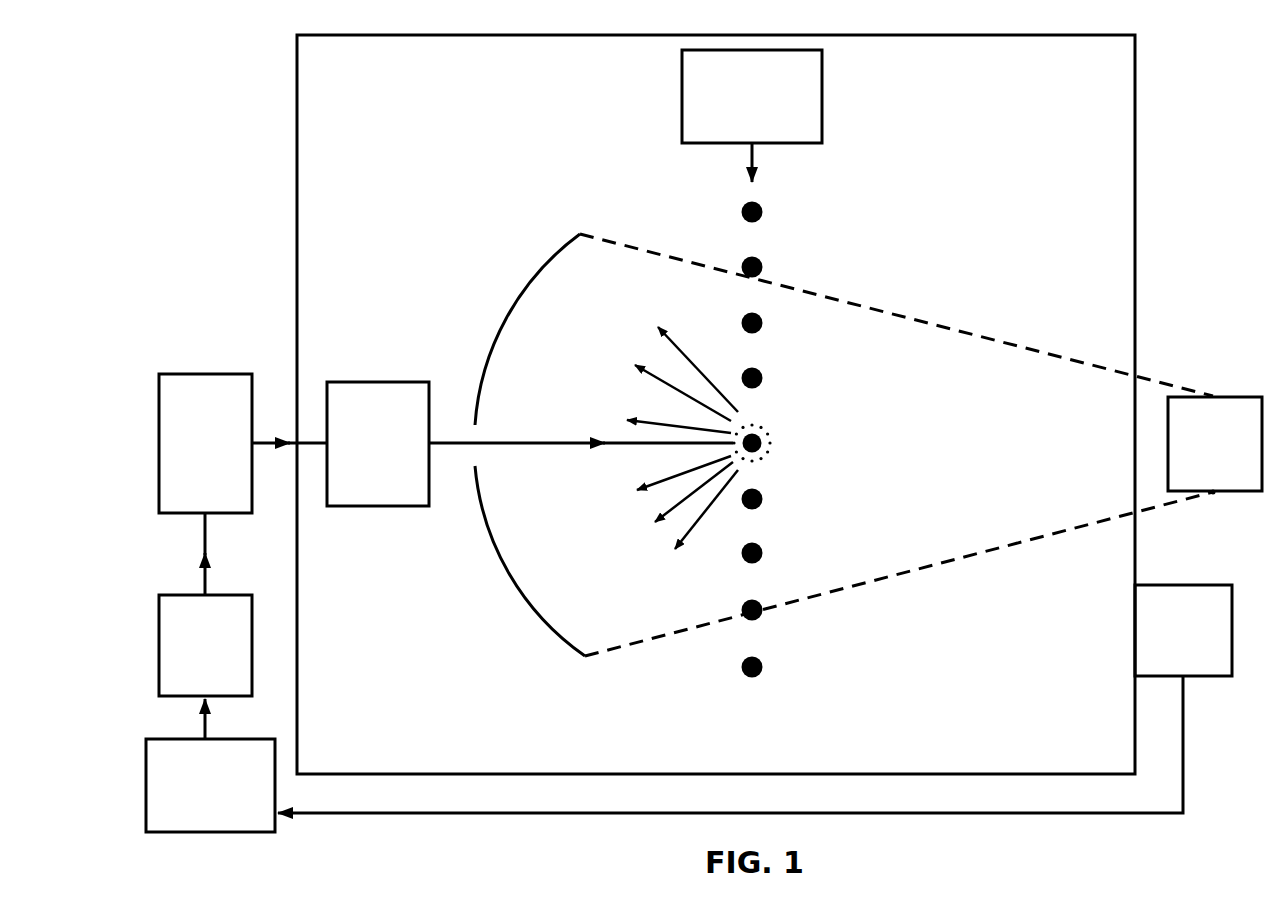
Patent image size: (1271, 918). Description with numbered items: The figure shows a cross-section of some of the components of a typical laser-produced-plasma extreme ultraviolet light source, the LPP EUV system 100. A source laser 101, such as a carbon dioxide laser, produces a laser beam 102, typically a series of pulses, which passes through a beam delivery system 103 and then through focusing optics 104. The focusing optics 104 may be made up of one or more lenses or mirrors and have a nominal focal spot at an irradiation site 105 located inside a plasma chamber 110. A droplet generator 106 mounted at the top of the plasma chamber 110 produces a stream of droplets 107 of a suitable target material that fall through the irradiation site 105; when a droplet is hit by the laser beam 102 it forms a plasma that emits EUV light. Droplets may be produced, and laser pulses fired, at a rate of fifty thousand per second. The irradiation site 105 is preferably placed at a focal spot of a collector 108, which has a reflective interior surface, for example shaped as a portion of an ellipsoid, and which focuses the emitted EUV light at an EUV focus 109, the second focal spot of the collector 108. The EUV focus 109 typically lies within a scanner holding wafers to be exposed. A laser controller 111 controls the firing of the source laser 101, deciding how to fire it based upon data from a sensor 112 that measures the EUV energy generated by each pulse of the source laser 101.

The LPP EUV system 100 is at (262, 259).
The source laser 101 is at (205, 645).
The laser beam 102 is at (310, 440).
The beam delivery system 103 is at (205, 443).
The focusing optics 104 is at (378, 444).
The irradiation site 105 is at (763, 443).
The droplet generator 106 is at (752, 116).
The droplets 107 is at (785, 197).
The collector 108 is at (552, 257).
The EUV focus 109 is at (921, 445).
The plasma chamber 110 is at (716, 404).
The laser controller 111 is at (210, 765).
The sensor 112 is at (755, 699).